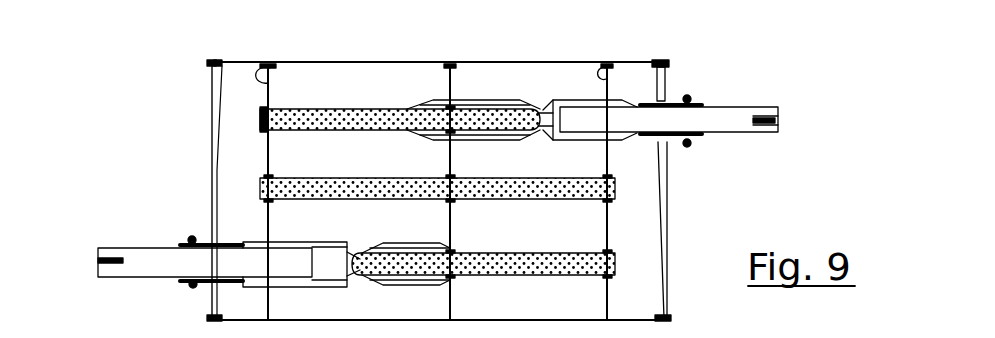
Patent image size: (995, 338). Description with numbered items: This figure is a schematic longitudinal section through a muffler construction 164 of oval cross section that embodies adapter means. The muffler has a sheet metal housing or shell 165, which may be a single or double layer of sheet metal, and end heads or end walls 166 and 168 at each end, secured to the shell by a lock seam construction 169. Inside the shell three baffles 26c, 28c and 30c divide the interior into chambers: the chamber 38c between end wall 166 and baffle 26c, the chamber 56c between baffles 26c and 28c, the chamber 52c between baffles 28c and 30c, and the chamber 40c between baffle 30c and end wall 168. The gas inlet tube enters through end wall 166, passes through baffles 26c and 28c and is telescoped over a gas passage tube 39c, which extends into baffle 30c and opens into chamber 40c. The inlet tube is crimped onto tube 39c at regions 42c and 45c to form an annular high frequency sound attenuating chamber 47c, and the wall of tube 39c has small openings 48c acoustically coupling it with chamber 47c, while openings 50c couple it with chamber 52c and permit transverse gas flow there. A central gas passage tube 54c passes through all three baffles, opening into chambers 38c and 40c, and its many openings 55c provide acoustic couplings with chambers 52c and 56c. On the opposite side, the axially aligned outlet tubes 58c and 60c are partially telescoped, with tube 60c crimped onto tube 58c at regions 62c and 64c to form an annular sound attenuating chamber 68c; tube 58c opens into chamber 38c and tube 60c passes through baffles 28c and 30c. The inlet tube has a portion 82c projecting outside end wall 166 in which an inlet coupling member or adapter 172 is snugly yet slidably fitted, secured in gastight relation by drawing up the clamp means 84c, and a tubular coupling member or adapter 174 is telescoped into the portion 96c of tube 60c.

The muffler construction 164 is at (348, 43).
The sheet metal housing or shell 165 is at (326, 62).
The end head or end wall 166 is at (213, 95).
The end head or end wall 168 is at (664, 159).
The lock seam construction 169 is at (213, 60).
The inlet coupling member or adapter 172 is at (98, 247).
The tubular coupling member or adapter 174 is at (768, 107).
The baffle 26c is at (268, 61).
The baffle 28c is at (437, 78).
The baffle 30c is at (609, 45).
The chamber 38c is at (229, 140).
The gas passage means or tube 39c is at (596, 276).
The chamber 40c is at (628, 78).
The crimped region 42c is at (357, 249).
The crimped region 45c is at (448, 278).
The annular high frequency sound attenuating chamber 47c is at (397, 283).
The small outlets or openings 48c is at (398, 266).
The openings or outlets 50c is at (507, 255).
The chamber 52c is at (551, 72).
The gas passage means or tube 54c is at (378, 146).
The openings or outlets 55c is at (333, 190).
The chamber 56c is at (359, 78).
The gas passage tube 58c is at (282, 108).
The gas passage tube 60c is at (586, 100).
The crimped region 62c is at (426, 104).
The crimped region 64c is at (541, 101).
The annular sound attenuating chamber 68c is at (458, 103).
The portion of the inlet tube 82c is at (204, 241).
The clamp means 84c is at (688, 96).
The portion of the outlet tube 96c is at (698, 105).